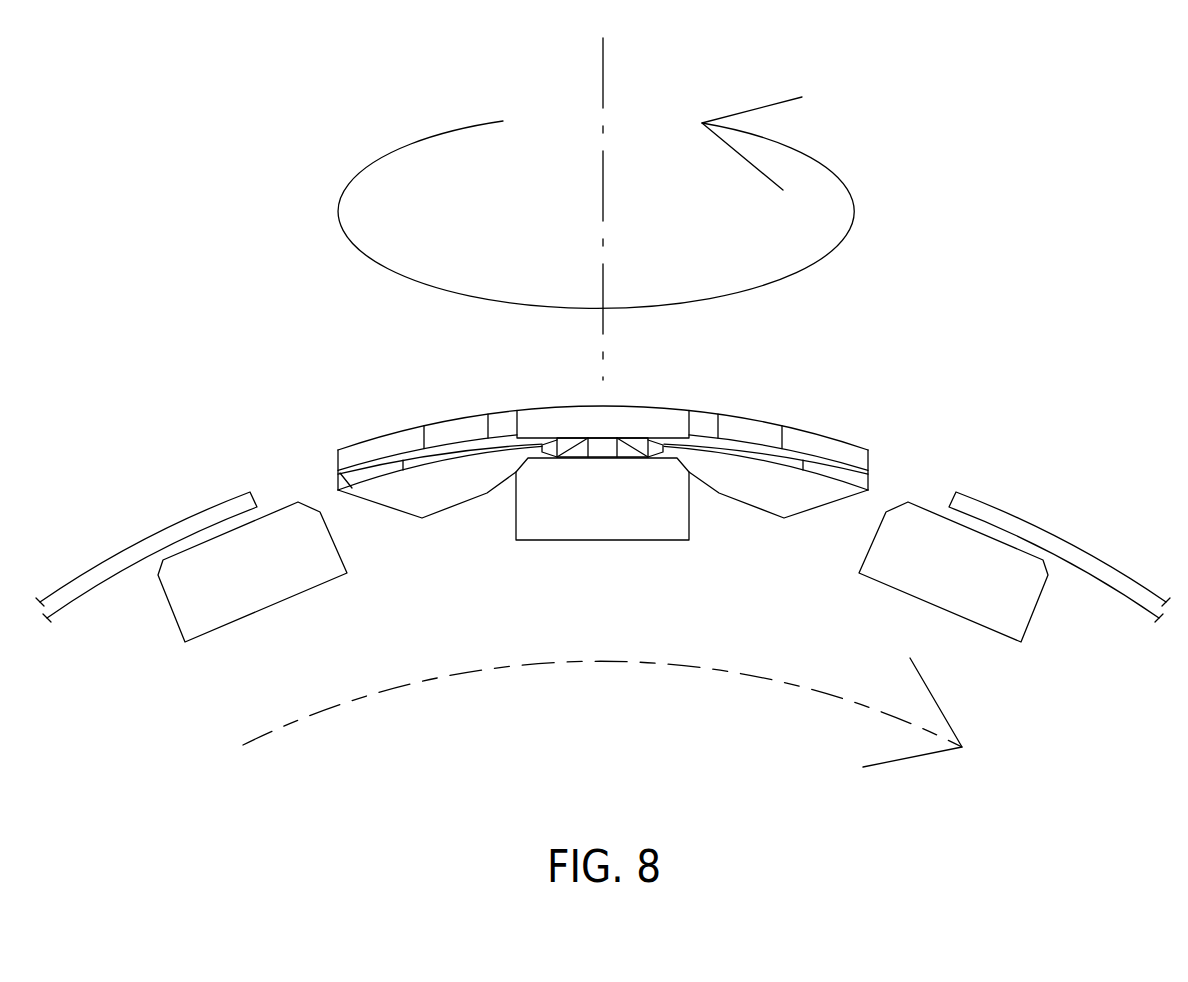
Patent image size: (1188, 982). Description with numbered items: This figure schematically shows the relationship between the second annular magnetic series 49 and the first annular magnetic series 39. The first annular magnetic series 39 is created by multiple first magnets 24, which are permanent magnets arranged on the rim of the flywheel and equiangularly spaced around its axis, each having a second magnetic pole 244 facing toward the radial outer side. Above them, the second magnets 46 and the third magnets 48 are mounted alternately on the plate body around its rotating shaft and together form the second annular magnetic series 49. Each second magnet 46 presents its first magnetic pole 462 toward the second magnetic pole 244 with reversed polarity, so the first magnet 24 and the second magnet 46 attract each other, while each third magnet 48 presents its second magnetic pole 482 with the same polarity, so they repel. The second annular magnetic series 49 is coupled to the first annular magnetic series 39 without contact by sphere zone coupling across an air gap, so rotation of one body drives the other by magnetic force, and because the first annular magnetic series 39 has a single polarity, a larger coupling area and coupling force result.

The first magnet 24 is at (653, 520).
The second magnetic pole 244 is at (574, 458).
The first annular magnetic series 39 is at (170, 652).
The second magnet 46 is at (665, 425).
The first magnetic pole 462 is at (338, 455).
The third magnet 48 is at (827, 447).
The second magnetic pole 482 is at (800, 452).
The second annular magnetic series 49 is at (428, 392).